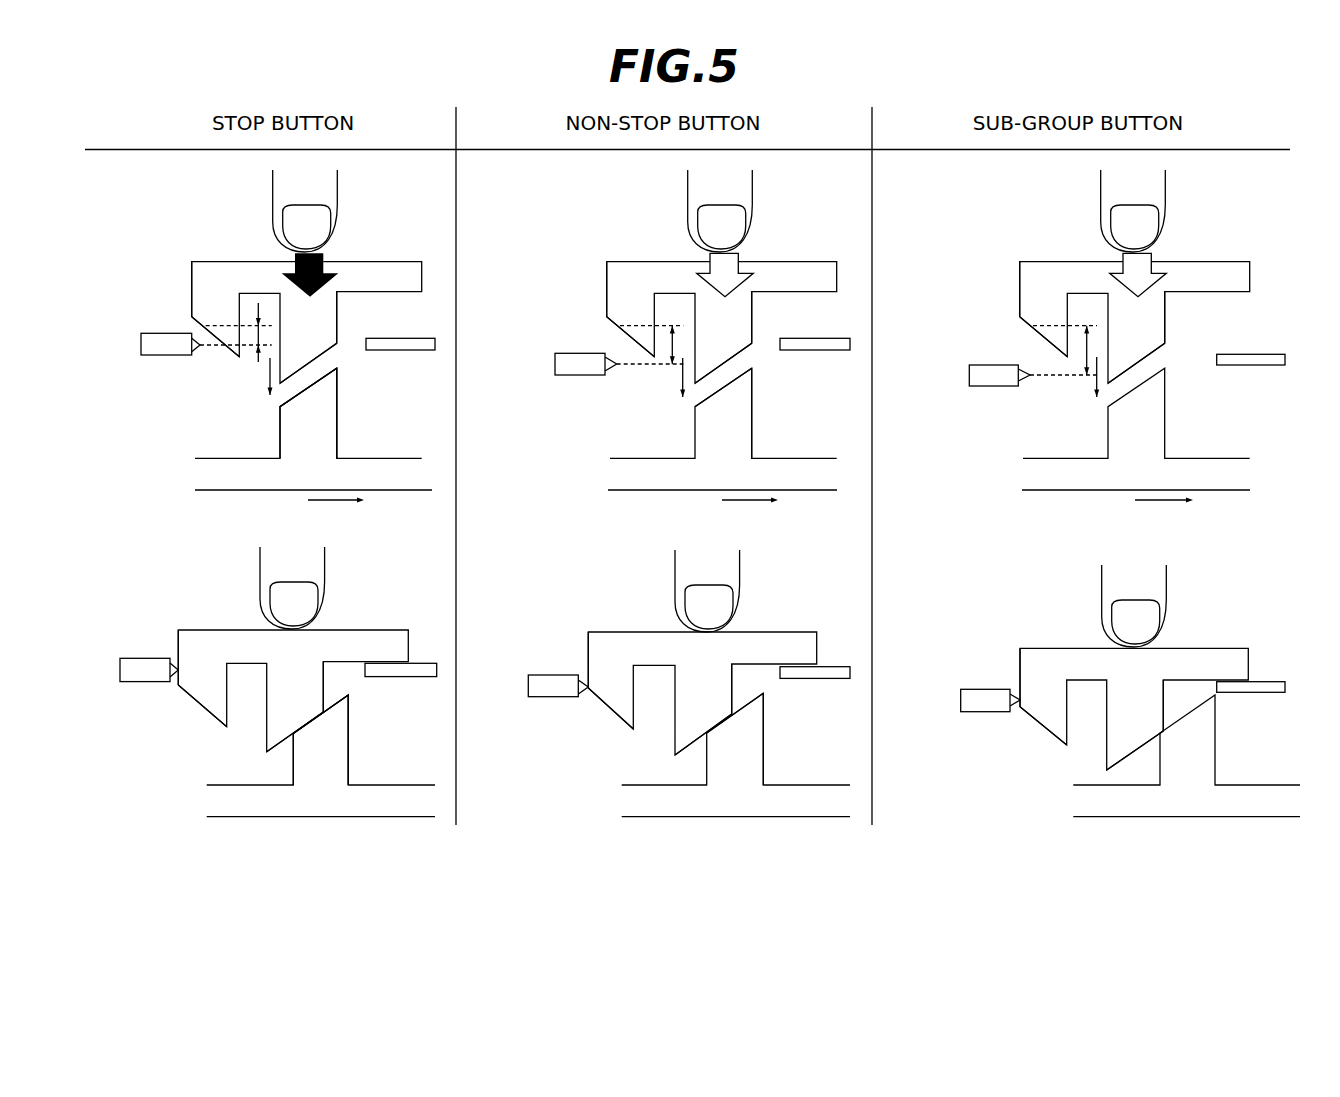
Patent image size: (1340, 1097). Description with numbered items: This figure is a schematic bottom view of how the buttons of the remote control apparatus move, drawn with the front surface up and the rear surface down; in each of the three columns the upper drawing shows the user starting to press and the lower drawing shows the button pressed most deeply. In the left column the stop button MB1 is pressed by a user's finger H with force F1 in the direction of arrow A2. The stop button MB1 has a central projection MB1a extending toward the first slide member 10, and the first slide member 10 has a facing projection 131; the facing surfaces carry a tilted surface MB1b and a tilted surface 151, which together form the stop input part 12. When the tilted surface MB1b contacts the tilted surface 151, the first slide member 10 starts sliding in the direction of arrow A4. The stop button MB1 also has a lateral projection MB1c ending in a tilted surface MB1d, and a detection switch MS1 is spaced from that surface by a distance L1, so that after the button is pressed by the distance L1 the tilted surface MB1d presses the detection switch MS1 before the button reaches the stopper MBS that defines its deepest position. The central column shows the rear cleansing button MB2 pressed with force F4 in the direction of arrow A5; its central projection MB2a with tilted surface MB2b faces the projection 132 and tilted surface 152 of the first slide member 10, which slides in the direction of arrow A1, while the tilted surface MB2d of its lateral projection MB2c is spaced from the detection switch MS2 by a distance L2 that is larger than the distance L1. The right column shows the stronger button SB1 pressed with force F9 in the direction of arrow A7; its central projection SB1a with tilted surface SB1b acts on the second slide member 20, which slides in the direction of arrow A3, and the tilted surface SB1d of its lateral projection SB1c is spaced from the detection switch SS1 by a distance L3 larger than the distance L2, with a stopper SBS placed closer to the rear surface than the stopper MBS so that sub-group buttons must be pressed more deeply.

The user's finger H is at (338, 222).
The stop button MB1 is at (233, 261).
The force F1 is at (327, 272).
The central projection MB1a is at (337, 320).
The lateral projection MB1c is at (192, 303).
The tilted surface MB1d is at (223, 353).
The tilted surface MB1b is at (340, 350).
The detection switch MS1 is at (140, 343).
The distance L1 is at (253, 337).
The arrow A2 is at (267, 380).
The stopper MBS is at (393, 335).
The first slide member 10 is at (203, 472).
The tilted surface 151 is at (303, 380).
The projection 131 is at (338, 435).
The stop input part 12 is at (405, 403).
The arrow A4 is at (356, 502).
The rear cleansing button MB2 is at (647, 260).
The force F4 is at (740, 272).
The central projection MB2a is at (750, 323).
The lateral projection MB2c is at (607, 303).
The tilted surface MB2d is at (642, 352).
The tilted surface MB2b is at (753, 350).
The detection switch MS2 is at (555, 363).
The distance L2 is at (670, 337).
The arrow A5 is at (680, 380).
The tilted surface 152 is at (717, 380).
The projection 132 is at (753, 435).
The arrow A1 is at (769, 502).
The stronger button SB1 is at (1060, 260).
The force F9 is at (1153, 272).
The central projection SB1a is at (1165, 323).
The lateral projection SB1c is at (1020, 303).
The tilted surface SB1d is at (1057, 352).
The tilted surface SB1b is at (1168, 350).
The detection switch SS1 is at (968, 375).
The distance L3 is at (1085, 348).
The arrow A7 is at (1092, 377).
The stopper SBS is at (1243, 353).
The second slide member 20 is at (1030, 472).
The arrow A3 is at (1183, 502).